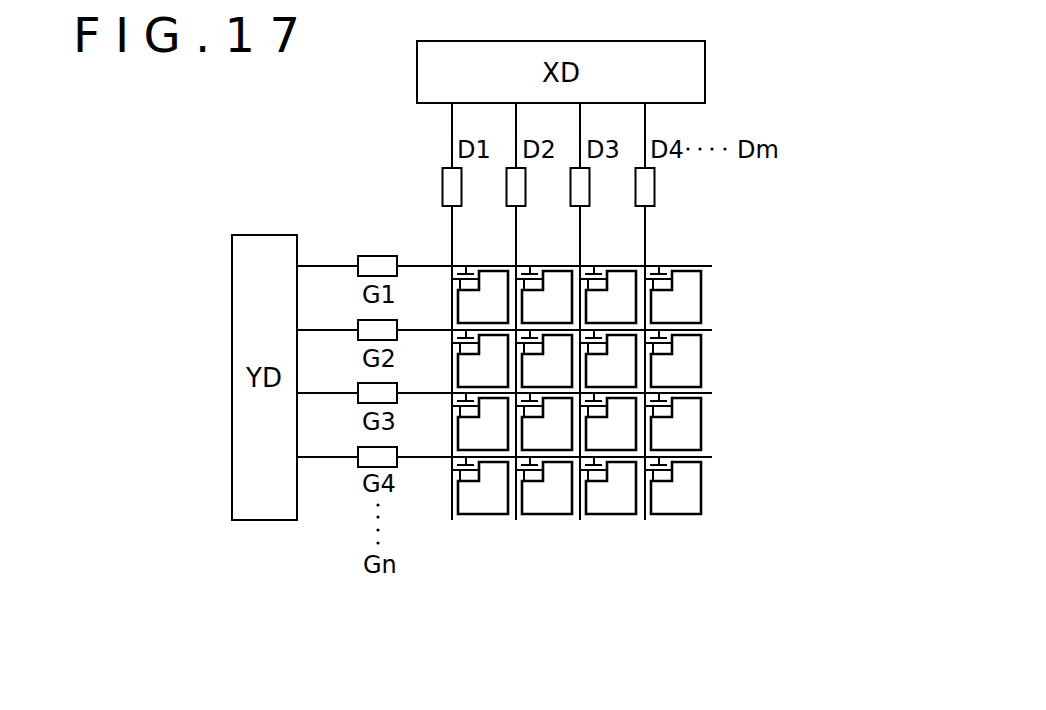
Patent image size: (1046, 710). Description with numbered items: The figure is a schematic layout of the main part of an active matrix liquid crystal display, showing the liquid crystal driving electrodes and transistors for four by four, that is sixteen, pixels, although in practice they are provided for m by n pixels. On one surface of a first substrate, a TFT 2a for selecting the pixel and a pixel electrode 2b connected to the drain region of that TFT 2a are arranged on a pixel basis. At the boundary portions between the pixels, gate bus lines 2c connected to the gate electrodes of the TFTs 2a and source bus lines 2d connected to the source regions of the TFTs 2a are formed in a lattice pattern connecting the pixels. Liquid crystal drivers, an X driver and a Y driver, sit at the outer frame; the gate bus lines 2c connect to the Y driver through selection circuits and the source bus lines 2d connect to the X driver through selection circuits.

The TFT 2a is at (726, 273).
The pixel electrode 2b is at (690, 298).
The gate bus line 2c is at (708, 327).
The source bus line 2d is at (650, 508).